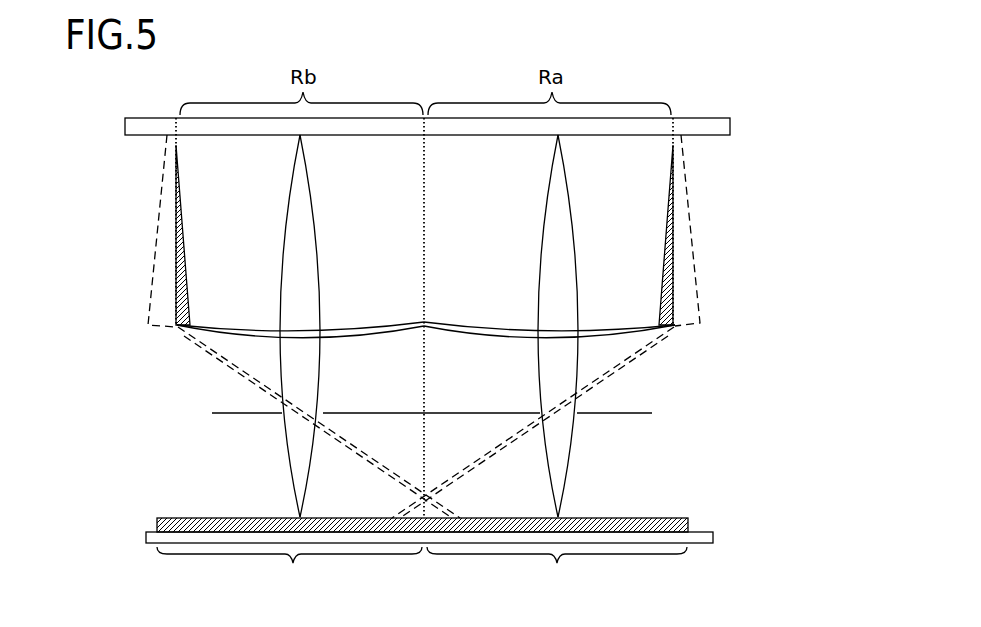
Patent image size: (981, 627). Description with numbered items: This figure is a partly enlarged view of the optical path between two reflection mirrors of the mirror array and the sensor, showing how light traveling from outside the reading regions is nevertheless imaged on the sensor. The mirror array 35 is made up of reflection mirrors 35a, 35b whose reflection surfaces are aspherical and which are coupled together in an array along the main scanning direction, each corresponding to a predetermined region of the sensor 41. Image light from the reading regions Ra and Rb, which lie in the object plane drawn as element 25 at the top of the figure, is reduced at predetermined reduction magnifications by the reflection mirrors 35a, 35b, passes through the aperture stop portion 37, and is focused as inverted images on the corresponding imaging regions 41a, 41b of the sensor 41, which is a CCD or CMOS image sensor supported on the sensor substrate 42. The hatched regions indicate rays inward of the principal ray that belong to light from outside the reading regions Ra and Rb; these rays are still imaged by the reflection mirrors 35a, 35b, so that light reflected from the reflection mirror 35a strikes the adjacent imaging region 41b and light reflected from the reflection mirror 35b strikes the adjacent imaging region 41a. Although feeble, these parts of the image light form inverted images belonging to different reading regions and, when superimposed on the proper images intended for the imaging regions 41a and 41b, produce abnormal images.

The light guide plate / display panel 25 is at (710, 118).
The mirror array 35 is at (482, 305).
The reflection mirror 35a is at (464, 322).
The reflection mirror 35b is at (376, 322).
The aperture stop portion 37 is at (283, 416).
The sensor 41 is at (671, 517).
The imaging region 41a is at (557, 569).
The imaging region 41b is at (289, 569).
The sensor substrate 42 is at (714, 534).